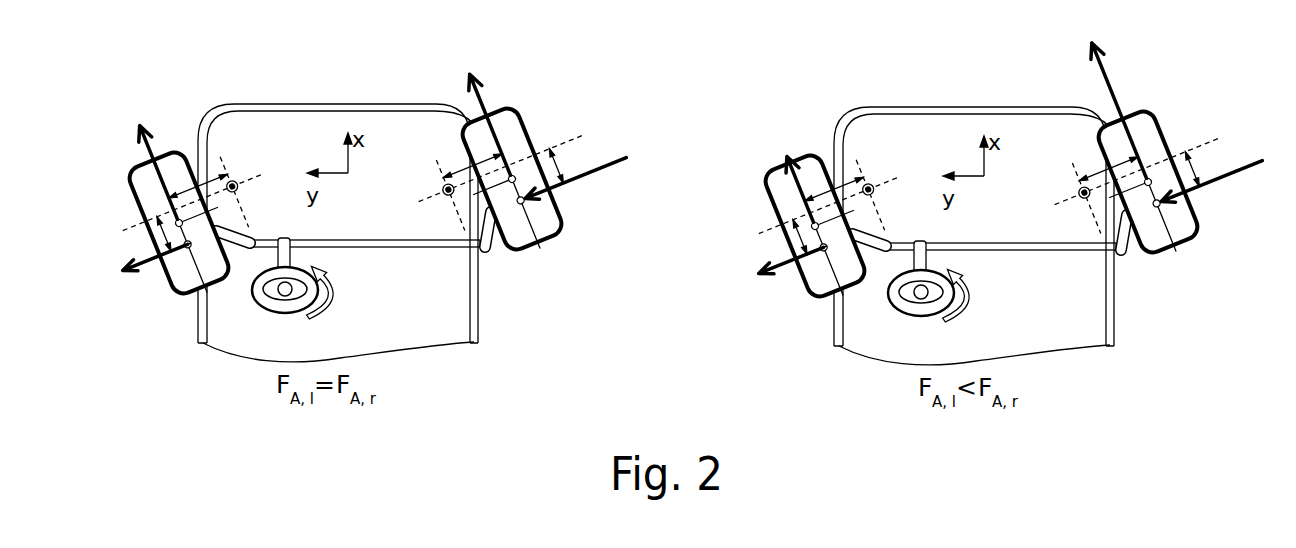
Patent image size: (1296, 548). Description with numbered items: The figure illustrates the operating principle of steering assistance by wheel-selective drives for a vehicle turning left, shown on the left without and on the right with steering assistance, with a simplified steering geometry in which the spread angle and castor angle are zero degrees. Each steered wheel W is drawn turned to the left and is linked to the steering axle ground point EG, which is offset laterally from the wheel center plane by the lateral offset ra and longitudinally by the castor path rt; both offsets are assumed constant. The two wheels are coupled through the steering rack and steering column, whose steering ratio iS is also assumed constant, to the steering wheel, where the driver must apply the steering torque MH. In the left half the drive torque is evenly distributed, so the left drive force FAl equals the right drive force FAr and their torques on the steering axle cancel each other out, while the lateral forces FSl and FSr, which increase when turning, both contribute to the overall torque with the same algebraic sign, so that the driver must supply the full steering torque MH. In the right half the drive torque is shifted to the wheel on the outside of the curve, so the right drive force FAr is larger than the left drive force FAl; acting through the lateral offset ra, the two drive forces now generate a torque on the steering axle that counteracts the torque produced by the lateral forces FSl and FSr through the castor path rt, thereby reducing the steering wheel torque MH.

The wheel W is at (665, 206).
The steering axle ground point EG is at (674, 190).
The lateral offset ra is at (653, 169).
The castor path rt is at (672, 215).
The left drive force FAl is at (476, 150).
The right drive force FAr is at (792, 110).
The left lateral force FSl is at (454, 276).
The right lateral force FSr is at (904, 183).
The steering ratio iS is at (602, 244).
The steering torque MH is at (628, 294).